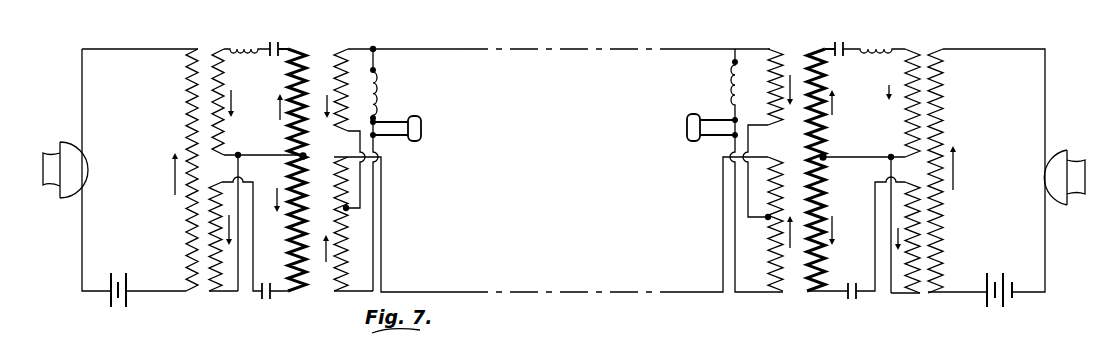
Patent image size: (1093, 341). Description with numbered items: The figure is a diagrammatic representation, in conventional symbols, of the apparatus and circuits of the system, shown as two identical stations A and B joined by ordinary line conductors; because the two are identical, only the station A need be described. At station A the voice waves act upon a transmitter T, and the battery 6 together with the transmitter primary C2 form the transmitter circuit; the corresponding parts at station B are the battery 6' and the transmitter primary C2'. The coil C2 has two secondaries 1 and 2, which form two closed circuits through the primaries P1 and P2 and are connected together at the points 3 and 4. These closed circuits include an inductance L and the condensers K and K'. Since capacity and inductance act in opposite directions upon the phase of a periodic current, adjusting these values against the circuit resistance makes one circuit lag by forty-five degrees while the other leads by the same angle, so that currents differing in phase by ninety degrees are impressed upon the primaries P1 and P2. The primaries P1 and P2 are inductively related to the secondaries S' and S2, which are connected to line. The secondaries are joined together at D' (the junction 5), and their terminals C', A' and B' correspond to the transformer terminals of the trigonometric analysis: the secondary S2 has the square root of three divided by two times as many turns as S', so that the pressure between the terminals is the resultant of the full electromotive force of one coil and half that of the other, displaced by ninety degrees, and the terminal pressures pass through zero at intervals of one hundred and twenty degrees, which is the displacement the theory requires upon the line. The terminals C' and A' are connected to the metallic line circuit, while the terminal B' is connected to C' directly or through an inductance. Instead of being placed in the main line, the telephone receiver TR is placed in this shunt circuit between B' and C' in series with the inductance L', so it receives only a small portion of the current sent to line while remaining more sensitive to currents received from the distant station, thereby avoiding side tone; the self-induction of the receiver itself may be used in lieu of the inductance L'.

The secondary of primary coil C2 1 is at (564, 244).
The secondary of primary coil C2 2 is at (566, 103).
The connection point 3 is at (564, 216).
The connection point 4 is at (560, 151).
The junction point on secondary S' 5 is at (557, 208).
The battery 6 is at (247, 175).
The battery 6' is at (999, 298).
The station A is at (147, 158).
The station B is at (982, 159).
The transmitter T is at (564, 167).
The telephone receiver TR is at (554, 137).
The transmitter primary C2 is at (174, 170).
The transmitter primary C2' is at (955, 171).
The terminal C' is at (556, 39).
The terminal A' is at (550, 216).
The terminal B' is at (332, 295).
The connection point D' is at (360, 217).
The condenser K is at (556, 42).
The condenser K' is at (561, 302).
The inductance L is at (564, 41).
The inductance L' is at (577, 170).
The primary coil P1 is at (564, 215).
The primary coil P2 is at (564, 170).
The secondary coil S' is at (558, 224).
The secondary coil S2 is at (558, 133).